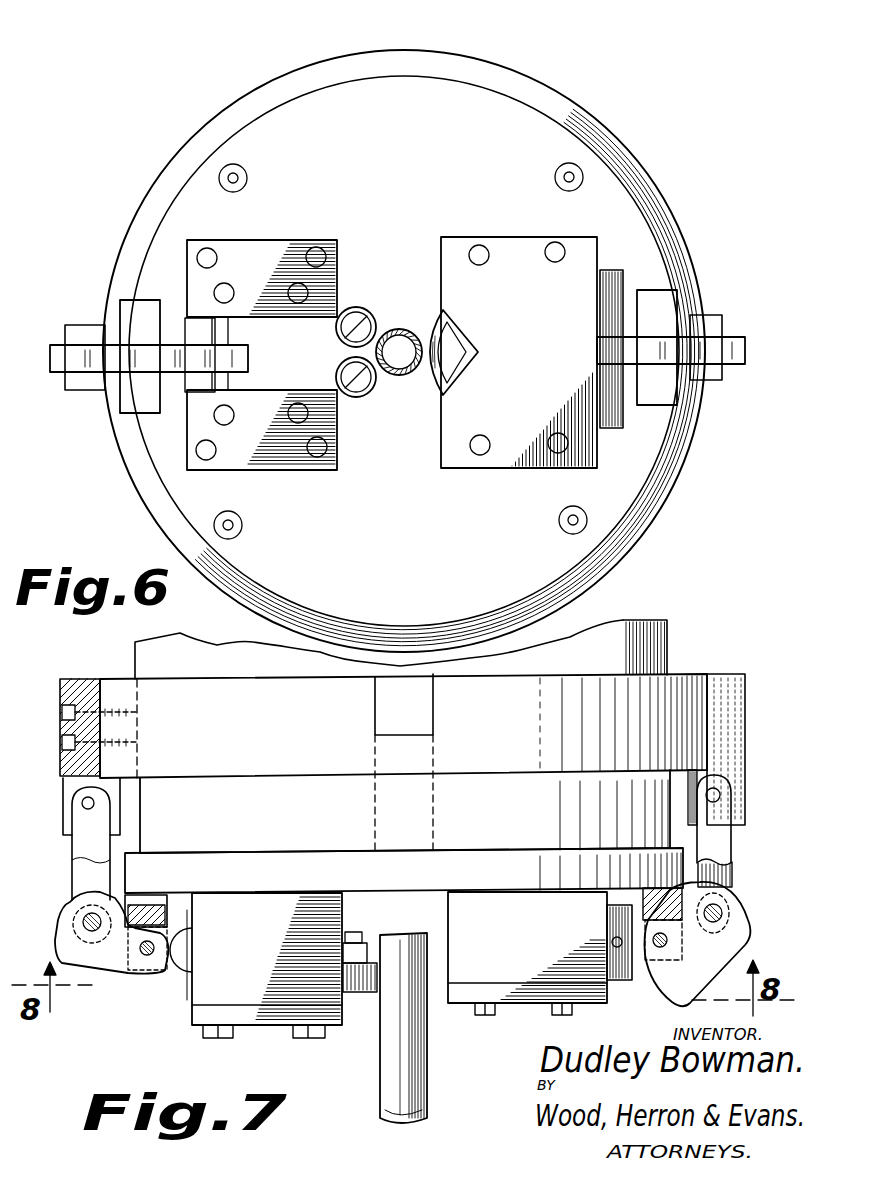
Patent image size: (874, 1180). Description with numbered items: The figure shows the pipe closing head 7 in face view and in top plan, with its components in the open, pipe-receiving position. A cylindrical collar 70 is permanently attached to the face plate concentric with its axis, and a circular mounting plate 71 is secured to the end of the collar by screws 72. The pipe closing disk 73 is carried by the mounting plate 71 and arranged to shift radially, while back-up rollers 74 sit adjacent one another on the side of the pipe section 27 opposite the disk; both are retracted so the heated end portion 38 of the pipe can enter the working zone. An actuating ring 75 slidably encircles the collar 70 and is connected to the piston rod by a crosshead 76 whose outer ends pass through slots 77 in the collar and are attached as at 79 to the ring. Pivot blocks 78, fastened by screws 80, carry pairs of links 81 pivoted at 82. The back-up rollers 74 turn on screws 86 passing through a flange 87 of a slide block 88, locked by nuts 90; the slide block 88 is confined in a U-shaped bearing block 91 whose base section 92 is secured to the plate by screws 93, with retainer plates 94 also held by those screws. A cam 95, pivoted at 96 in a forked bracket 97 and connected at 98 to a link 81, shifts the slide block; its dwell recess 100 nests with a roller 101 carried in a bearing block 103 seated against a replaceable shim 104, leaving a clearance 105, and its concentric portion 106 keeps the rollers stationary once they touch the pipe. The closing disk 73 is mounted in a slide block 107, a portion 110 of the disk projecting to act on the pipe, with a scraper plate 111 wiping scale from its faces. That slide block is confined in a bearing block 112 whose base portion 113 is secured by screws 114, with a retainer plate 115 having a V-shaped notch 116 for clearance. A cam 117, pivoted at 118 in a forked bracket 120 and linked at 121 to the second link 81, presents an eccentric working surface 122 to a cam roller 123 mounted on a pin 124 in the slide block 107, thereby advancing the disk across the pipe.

In FIG. 6, the pipe closing head 7 is at (652, 178).
In FIG. 7, the pipe closing head 7 is at (690, 666).
In FIG. 6, the pipe section 27 is at (405, 378).
In FIG. 7, the pipe section 27 is at (428, 1097).
In FIG. 7, the heated end portion 38 is at (403, 953).
In FIG. 7, the cylindrical collar 70 is at (623, 640).
In FIG. 6, the circular mounting plate 71 is at (525, 130).
In FIG. 7, the circular mounting plate 71 is at (335, 868).
In FIG. 6, the screws 72 is at (238, 163).
In FIG. 6, the pipe closing disk 73 is at (443, 335).
In FIG. 6, the back-up rollers 74 is at (370, 330).
In FIG. 7, the back-up rollers 74 is at (357, 997).
In FIG. 6, the actuating ring 75 is at (500, 72).
In FIG. 7, the actuating ring 75 is at (243, 757).
In FIG. 7, the crosshead 76 is at (387, 707).
In FIG. 7, the slots 77 is at (420, 830).
In FIG. 7, the pivot blocks 78 is at (58, 695).
In FIG. 7, the attachment 79 is at (433, 718).
In FIG. 7, the screws 80 is at (62, 742).
In FIG. 6, the links 81 is at (75, 330).
In FIG. 7, the links 81 is at (80, 866).
In FIG. 7, the pivotal connection 82 is at (80, 803).
In FIG. 6, the screws 86 is at (353, 310).
In FIG. 7, the screws 86 is at (360, 927).
In FIG. 7, the flange 87 is at (367, 938).
In FIG. 6, the slide block 88 is at (299, 353).
In FIG. 7, the nuts 90 is at (355, 927).
In FIG. 6, the bearing block 91 is at (248, 240).
In FIG. 7, the bearing block 91 is at (264, 946).
In FIG. 7, the base section 92 is at (250, 870).
In FIG. 6, the screws 93 is at (207, 257).
In FIG. 7, the screws 93 is at (225, 1040).
In FIG. 6, the retainer plates 94 is at (287, 256).
In FIG. 7, the retainer plates 94 is at (265, 1025).
In FIG. 6, the cam 95 is at (112, 340).
In FIG. 7, the cam 95 is at (68, 948).
In FIG. 7, the pivot pin 96 is at (148, 952).
In FIG. 6, the forked bracket 97 is at (128, 310).
In FIG. 7, the forked bracket 97 is at (150, 905).
In FIG. 7, the pivotal connection 98 is at (86, 920).
In FIG. 7, the dwell recess 100 is at (182, 953).
In FIG. 6, the roller 101 is at (172, 340).
In FIG. 7, the roller 101 is at (180, 967).
In FIG. 6, the bearing block 103 is at (192, 378).
In FIG. 7, the bearing block 103 is at (187, 993).
In FIG. 6, the replaceable shim 104 is at (222, 330).
In FIG. 6, the clearance 105 is at (398, 376).
In FIG. 7, the clearance 105 is at (377, 1007).
In FIG. 7, the concentric portion 106 is at (170, 978).
In FIG. 6, the slide block 107 is at (612, 280).
In FIG. 7, the slide block 107 is at (607, 917).
In FIG. 6, the projecting portion 110 is at (436, 352).
In FIG. 7, the projecting portion 110 is at (445, 945).
In FIG. 6, the scraper plate 111 is at (452, 375).
In FIG. 6, the bearing block 112 is at (553, 240).
In FIG. 7, the bearing block 112 is at (490, 927).
In FIG. 7, the base portion 113 is at (520, 910).
In FIG. 6, the screws 114 is at (560, 252).
In FIG. 7, the screws 114 is at (483, 1015).
In FIG. 6, the retainer plate 115 is at (517, 250).
In FIG. 7, the retainer plate 115 is at (510, 1003).
In FIG. 6, the V-shaped notch 116 is at (460, 336).
In FIG. 6, the cam 117 is at (683, 305).
In FIG. 7, the cam 117 is at (717, 942).
In FIG. 7, the pivot 118 is at (668, 942).
In FIG. 6, the forked bracket 120 is at (658, 392).
In FIG. 7, the forked bracket 120 is at (683, 867).
In FIG. 7, the pivotal connection 121 is at (718, 912).
In FIG. 7, the eccentric working surface 122 is at (650, 1000).
In FIG. 6, the cam roller 123 is at (612, 349).
In FIG. 7, the cam roller 123 is at (633, 937).
In FIG. 7, the pin 124 is at (612, 942).